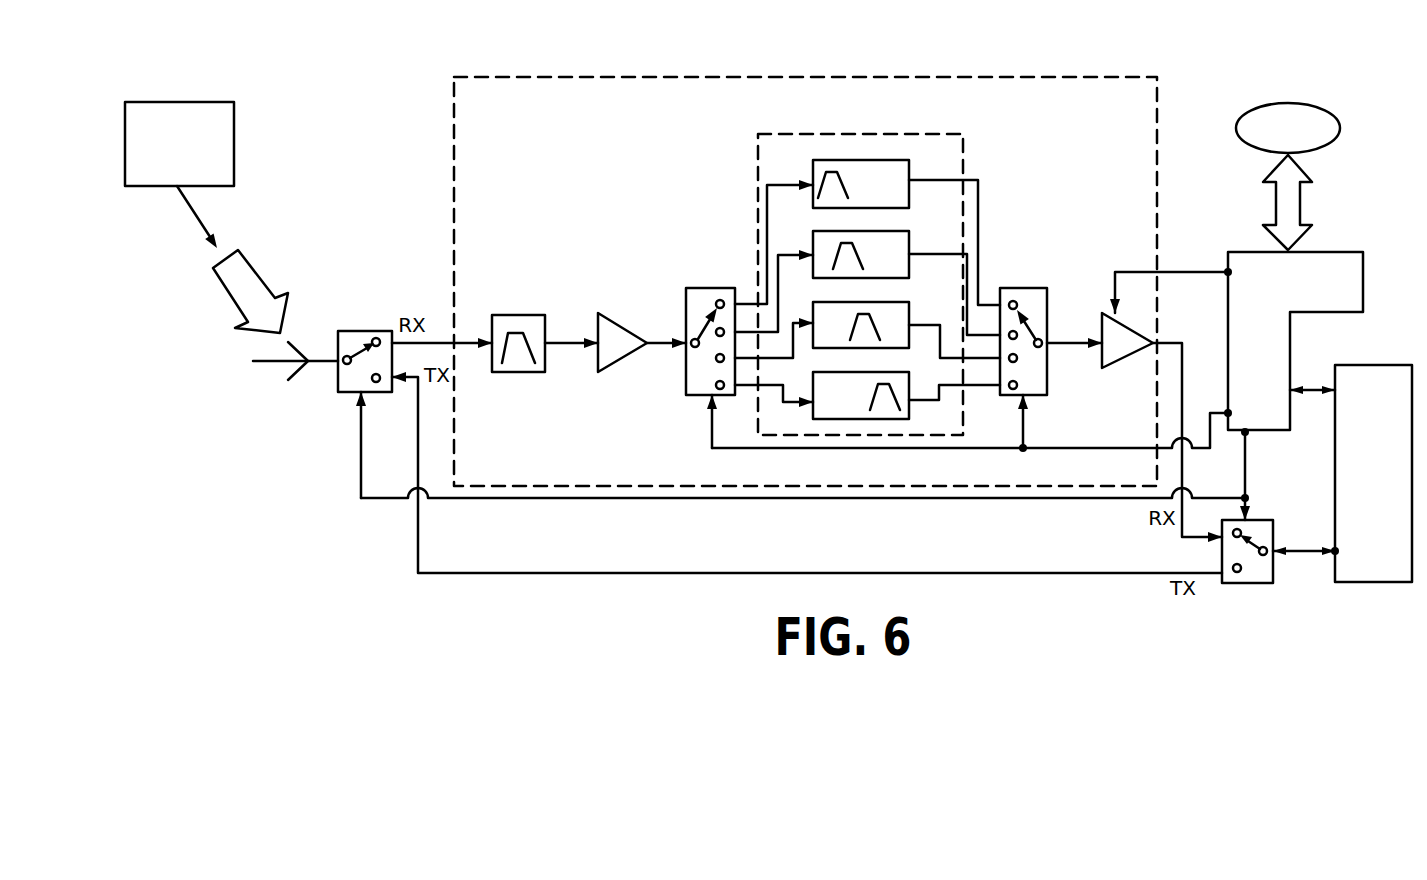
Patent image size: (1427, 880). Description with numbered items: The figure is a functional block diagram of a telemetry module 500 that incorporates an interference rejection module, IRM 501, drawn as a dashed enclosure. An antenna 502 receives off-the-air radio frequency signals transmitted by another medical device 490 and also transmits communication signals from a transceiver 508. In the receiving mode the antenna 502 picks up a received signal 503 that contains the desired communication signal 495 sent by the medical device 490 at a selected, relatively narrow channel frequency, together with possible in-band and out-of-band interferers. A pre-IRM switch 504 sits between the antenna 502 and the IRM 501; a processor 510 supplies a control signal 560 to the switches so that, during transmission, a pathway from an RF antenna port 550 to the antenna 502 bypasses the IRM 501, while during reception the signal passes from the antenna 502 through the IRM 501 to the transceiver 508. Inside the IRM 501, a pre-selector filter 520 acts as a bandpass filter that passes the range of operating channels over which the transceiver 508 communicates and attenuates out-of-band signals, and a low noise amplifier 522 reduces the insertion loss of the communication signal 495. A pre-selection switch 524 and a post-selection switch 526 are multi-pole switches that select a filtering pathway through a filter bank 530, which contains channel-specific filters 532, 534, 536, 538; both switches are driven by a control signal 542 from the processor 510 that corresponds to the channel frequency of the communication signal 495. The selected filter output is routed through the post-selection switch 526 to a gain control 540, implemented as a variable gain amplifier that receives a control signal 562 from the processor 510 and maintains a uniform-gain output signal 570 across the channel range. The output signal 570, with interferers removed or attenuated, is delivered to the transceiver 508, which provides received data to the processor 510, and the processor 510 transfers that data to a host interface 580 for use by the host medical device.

The telemetry module 500 is at (847, 31).
The IRM 501 is at (934, 77).
The medical device 490 is at (193, 102).
The communication signal 495 is at (180, 200).
The received signal 503 is at (222, 287).
The antenna 502 is at (263, 362).
The pre-IRM switch 504 is at (345, 331).
The control signal 560 is at (357, 477).
The pre-selector filter 520 is at (495, 372).
The low noise amplifier 522 is at (622, 358).
The pre-selection switch 524 is at (683, 373).
The control signal 542 is at (707, 427).
The filter bank 530 is at (900, 134).
The channel-specific filter 532 is at (909, 188).
The channel-specific filter 534 is at (909, 265).
The channel-specific filter 536 is at (909, 340).
The channel-specific filter 538 is at (909, 407).
The post-selection switch 526 is at (1017, 288).
The gain control 540 is at (1125, 360).
The output signal 570 is at (1168, 340).
The control signal 562 is at (1197, 272).
The processor 510 is at (1243, 327).
The host interface 580 is at (1337, 133).
The transceiver 508 is at (1358, 482).
The RF antenna port 550 is at (1330, 557).